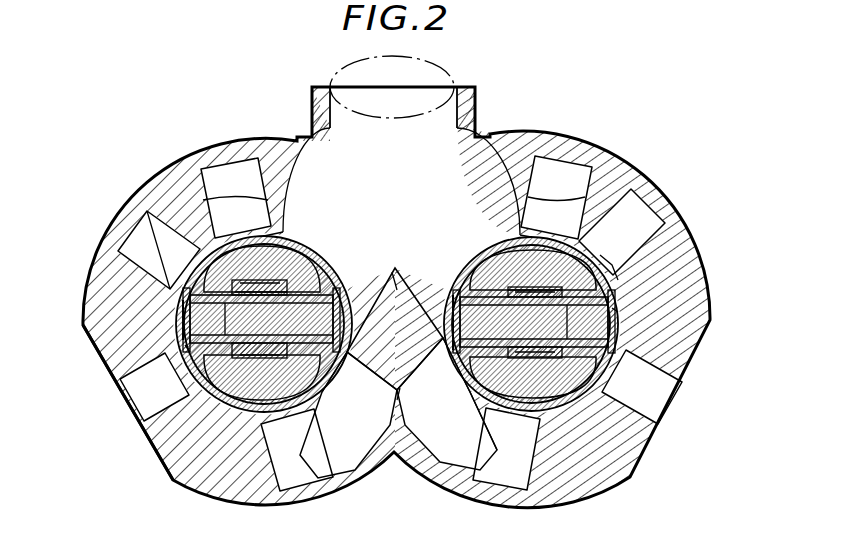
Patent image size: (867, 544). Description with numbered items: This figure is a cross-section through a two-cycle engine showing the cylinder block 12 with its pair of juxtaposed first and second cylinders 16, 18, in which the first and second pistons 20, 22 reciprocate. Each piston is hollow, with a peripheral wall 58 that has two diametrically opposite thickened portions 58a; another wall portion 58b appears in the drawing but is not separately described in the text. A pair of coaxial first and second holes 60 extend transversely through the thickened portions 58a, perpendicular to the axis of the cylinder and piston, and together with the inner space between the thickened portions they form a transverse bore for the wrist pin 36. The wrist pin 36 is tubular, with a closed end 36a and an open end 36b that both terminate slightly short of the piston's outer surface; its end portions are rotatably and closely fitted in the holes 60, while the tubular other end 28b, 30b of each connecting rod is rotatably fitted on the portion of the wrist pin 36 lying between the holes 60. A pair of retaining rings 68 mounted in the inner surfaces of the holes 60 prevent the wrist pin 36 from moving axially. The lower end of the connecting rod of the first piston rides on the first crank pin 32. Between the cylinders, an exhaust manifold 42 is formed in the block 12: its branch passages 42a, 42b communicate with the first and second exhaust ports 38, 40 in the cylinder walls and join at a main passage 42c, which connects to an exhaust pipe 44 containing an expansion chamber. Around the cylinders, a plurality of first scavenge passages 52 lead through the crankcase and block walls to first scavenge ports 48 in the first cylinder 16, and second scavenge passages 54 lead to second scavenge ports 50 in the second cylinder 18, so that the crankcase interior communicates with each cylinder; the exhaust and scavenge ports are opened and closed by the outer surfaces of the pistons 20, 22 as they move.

The cylinder block 12 is at (640, 182).
The first cylinder 16 is at (333, 352).
The second cylinder 18 is at (590, 330).
The first piston 20 is at (172, 300).
The second piston 22 is at (548, 238).
The other end of connecting rod 28b is at (272, 358).
The other end of connecting rod 30b is at (530, 288).
The first crank pin 32 is at (165, 438).
The wrist pin 36 is at (522, 357).
The closed end 36a is at (448, 318).
The open end 36b is at (183, 332).
The first exhaust port 38 is at (300, 250).
The second exhaust port 40 is at (456, 262).
The exhaust manifold 42 is at (477, 122).
The branch passage 42a is at (305, 205).
The branch passage 42b is at (477, 208).
The main passage 42c is at (312, 108).
The exhaust pipe 44 is at (445, 72).
The first scavenge ports 48 is at (183, 320).
The second scavenge ports 50 is at (552, 287).
The first scavenge passages 52 is at (232, 165).
The second scavenge passages 54 is at (555, 165).
The peripheral wall 58 is at (308, 372).
The thickened portions 58a is at (146, 222).
The vane tip 58b is at (606, 262).
The holes 60 is at (412, 300).
The retaining rings 68 is at (712, 300).